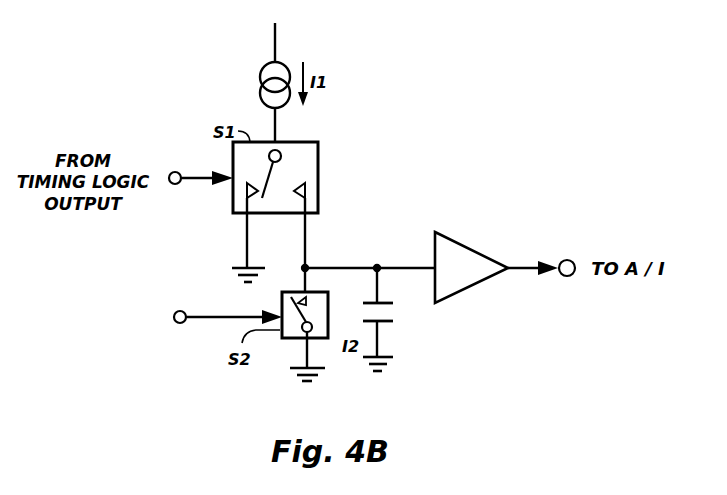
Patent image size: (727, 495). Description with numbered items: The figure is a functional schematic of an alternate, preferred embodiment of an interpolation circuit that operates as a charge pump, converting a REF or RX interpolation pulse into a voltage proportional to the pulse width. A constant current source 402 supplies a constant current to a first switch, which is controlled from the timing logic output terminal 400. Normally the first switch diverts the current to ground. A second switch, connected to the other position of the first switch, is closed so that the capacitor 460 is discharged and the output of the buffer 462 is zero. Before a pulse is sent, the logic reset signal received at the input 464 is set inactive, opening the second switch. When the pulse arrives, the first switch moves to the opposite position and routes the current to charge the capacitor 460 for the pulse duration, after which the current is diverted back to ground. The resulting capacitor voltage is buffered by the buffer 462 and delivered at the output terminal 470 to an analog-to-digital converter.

The timing logic input terminal 400 is at (175, 185).
The constant current source 402 is at (287, 62).
The capacitor 460 is at (388, 323).
The buffer 462 is at (467, 243).
The input 464 is at (176, 325).
The output terminal to A/I 470 is at (565, 277).